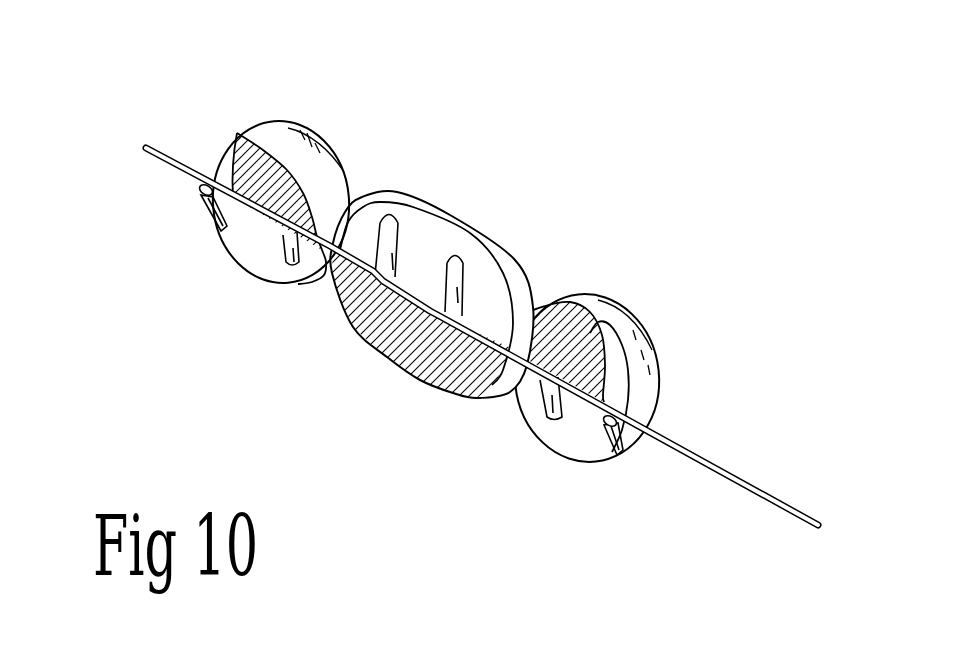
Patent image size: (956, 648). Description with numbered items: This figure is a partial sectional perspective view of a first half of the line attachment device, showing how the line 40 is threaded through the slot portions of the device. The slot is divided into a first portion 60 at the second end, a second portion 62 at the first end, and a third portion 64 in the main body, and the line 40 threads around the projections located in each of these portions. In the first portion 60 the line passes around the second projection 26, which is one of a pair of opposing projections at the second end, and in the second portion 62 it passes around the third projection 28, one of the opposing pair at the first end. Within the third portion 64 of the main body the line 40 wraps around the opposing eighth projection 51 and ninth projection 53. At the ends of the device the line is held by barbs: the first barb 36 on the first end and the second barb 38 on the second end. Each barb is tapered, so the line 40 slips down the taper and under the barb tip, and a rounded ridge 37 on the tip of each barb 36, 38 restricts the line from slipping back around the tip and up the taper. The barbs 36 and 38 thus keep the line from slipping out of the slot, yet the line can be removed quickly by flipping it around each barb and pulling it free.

The second projection 26 is at (283, 228).
The third projection 28 is at (543, 405).
The first barb 36 is at (617, 453).
The ridge 37 is at (205, 187).
The second barb 38 is at (205, 207).
The line 40 is at (711, 455).
The eighth projection 51 is at (376, 213).
The ninth projection 53 is at (462, 288).
The first portion of the slot 60 is at (260, 247).
The second portion of the slot 62 is at (570, 423).
The third portion of the slot 64 is at (417, 278).